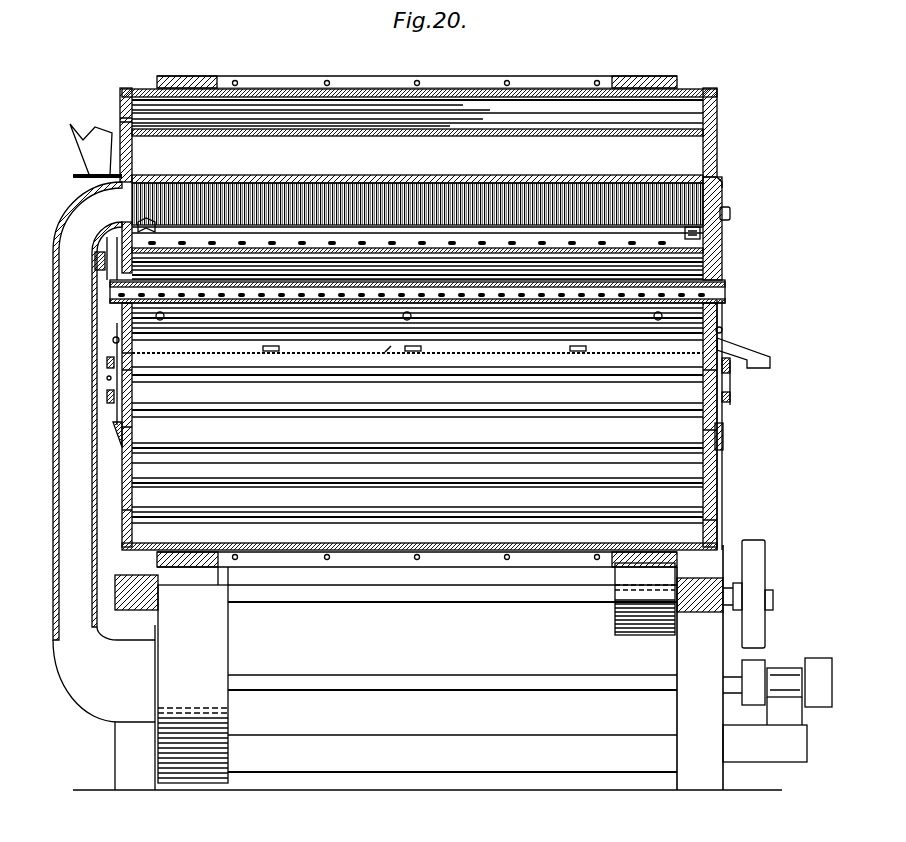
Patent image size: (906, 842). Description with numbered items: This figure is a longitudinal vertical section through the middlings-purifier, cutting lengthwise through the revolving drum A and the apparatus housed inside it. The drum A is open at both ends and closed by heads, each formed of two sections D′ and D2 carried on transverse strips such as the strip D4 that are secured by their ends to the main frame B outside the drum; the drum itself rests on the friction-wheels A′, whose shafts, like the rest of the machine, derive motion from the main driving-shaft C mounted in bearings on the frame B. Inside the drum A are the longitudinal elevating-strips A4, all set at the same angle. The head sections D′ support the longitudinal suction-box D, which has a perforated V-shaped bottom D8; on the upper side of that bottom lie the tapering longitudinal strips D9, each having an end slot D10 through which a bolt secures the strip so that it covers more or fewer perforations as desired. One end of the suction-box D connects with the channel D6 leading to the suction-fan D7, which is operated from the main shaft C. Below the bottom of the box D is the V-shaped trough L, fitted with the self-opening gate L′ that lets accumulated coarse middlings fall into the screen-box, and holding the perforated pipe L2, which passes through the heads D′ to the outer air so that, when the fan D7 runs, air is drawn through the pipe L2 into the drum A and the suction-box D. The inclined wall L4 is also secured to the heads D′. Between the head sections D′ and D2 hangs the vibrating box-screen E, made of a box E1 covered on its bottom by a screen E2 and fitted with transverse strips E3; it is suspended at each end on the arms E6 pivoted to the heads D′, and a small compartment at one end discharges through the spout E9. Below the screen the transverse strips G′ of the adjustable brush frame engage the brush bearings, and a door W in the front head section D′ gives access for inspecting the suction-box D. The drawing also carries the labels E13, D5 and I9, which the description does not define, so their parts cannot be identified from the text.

The revolving drum A is at (348, 80).
The elevating-strips A4 is at (458, 105).
The friction-wheels A′ is at (615, 618).
The inclined wall L4 is at (378, 136).
The suction-box D is at (425, 197).
The V-shaped bottom D8 is at (168, 242).
The longitudinal strips D9 is at (417, 234).
The V-shaped trough L is at (680, 265).
The pipe L2 is at (728, 290).
The self-opening gate L′ is at (237, 320).
The vibrating box-screen E is at (482, 352).
The belt clamp E13 is at (270, 352).
The screen E2 is at (388, 352).
The box E1 is at (414, 352).
The transverse strips E3 is at (583, 352).
The head-section D2 is at (123, 472).
The head-section D′ is at (128, 307).
The arms E6 is at (730, 327).
The discharge-spout E9 is at (755, 355).
The transverse strips G′ is at (107, 362).
The transverse strip D4 is at (724, 437).
The valve piece D5 is at (127, 222).
The slot D10 is at (700, 233).
The door W is at (722, 192).
The inlet pipe I9 is at (95, 140).
The channel D6 is at (108, 400).
The suction-fan D7 is at (187, 659).
The main driving-shaft C is at (465, 683).
The main frame B is at (440, 667).